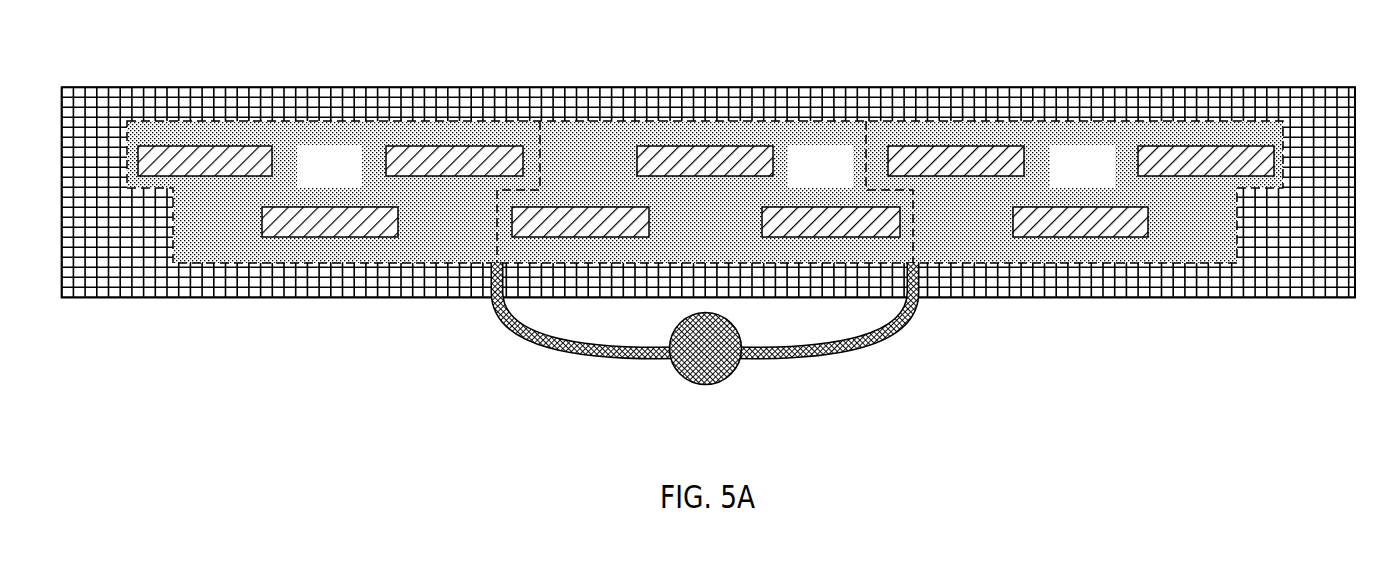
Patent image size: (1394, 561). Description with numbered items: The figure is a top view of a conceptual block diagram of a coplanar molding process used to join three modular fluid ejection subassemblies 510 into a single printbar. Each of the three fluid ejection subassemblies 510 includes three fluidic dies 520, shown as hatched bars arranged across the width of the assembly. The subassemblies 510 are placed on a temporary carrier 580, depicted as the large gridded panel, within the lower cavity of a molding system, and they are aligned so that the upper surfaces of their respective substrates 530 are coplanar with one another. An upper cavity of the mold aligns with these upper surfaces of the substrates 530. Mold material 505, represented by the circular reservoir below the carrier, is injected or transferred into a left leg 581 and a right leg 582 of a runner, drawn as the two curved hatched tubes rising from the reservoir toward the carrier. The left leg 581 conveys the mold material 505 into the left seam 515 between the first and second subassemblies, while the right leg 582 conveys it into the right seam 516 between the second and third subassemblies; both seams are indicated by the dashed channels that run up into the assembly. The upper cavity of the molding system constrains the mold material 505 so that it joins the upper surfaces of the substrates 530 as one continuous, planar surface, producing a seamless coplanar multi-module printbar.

The mold material 505 is at (700, 384).
The modular fluid ejection subassembly 510 is at (198, 147).
The left seam 515 is at (542, 120).
The right seam 516 is at (875, 121).
The fluidic die 520 is at (715, 147).
The substrate 530 is at (345, 178).
The temporary carrier 580 is at (640, 87).
The left leg 581 is at (531, 334).
The right leg 582 is at (885, 330).